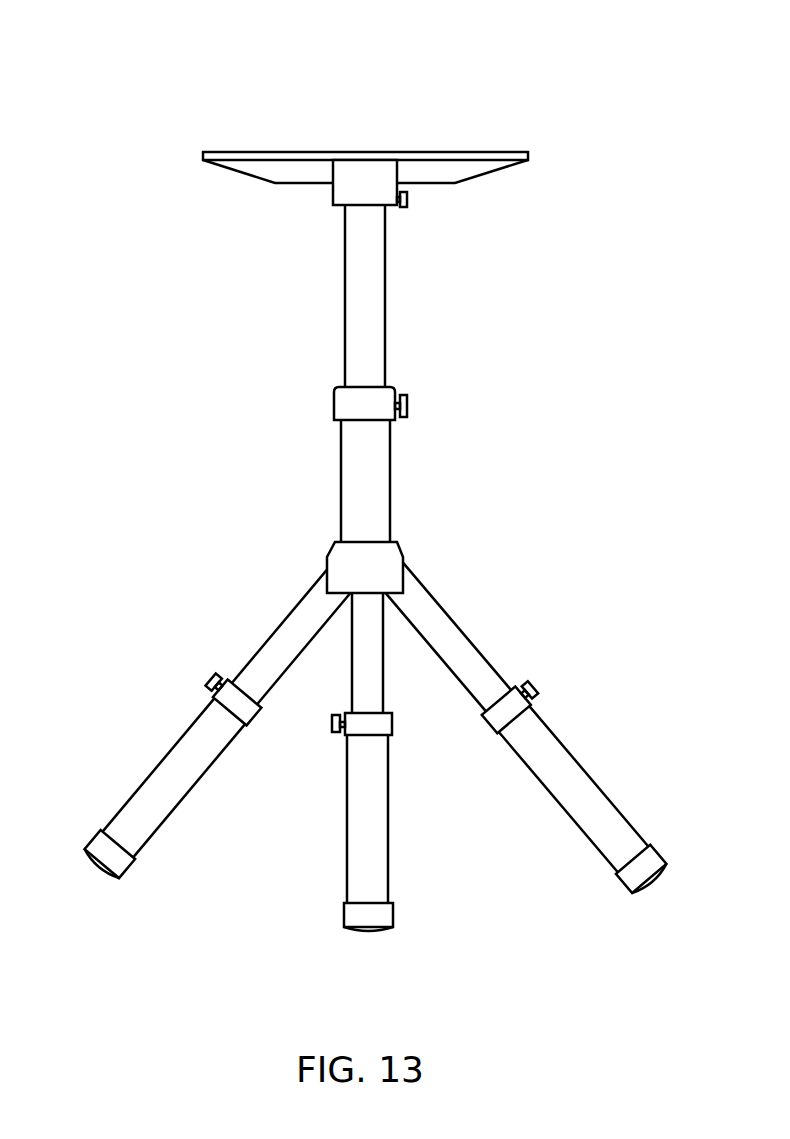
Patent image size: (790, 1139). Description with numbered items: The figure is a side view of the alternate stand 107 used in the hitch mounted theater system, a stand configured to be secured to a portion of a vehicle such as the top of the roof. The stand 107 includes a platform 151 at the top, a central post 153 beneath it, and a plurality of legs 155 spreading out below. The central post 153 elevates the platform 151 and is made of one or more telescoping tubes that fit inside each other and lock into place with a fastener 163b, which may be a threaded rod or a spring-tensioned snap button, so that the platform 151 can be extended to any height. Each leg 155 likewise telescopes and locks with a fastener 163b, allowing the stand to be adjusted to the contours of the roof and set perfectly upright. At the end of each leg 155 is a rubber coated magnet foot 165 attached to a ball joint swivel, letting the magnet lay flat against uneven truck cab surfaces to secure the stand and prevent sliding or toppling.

The stand 107 is at (156, 66).
The platform 151 is at (289, 200).
The central post 153 is at (330, 463).
The legs 155 is at (634, 785).
The fastener 163b is at (410, 405).
The magnet foot 165 is at (98, 874).